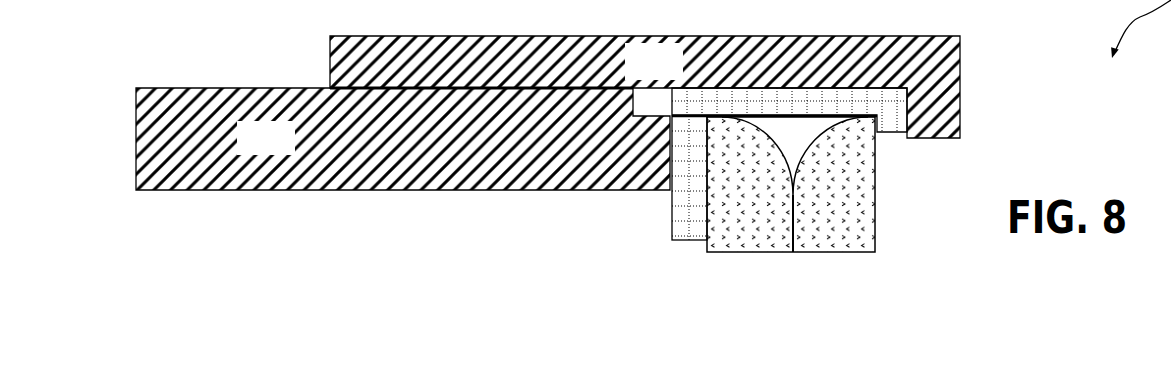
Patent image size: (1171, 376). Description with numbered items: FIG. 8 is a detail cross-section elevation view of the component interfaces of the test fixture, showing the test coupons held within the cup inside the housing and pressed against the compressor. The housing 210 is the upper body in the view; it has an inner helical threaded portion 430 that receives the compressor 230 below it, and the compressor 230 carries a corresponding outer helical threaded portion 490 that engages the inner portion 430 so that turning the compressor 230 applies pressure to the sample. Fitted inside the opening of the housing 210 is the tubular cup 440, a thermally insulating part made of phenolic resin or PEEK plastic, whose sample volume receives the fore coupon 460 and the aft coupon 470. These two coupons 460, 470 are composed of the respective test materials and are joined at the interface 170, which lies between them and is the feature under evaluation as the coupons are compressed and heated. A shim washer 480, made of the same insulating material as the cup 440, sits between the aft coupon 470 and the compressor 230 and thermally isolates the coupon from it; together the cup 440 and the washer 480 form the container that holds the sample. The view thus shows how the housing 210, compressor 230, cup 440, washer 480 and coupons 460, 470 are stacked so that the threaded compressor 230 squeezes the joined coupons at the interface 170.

The interface 170 is at (797, 227).
The housing 210 is at (675, 72).
The compressor 230 is at (288, 148).
The inner helical threaded portion 430 is at (510, 84).
The tubular cup 440 is at (890, 133).
The fore coupon 460 is at (811, 190).
The aft coupon 470 is at (760, 190).
The shim washer 480 is at (668, 214).
The outer helical threaded portion 490 is at (538, 92).